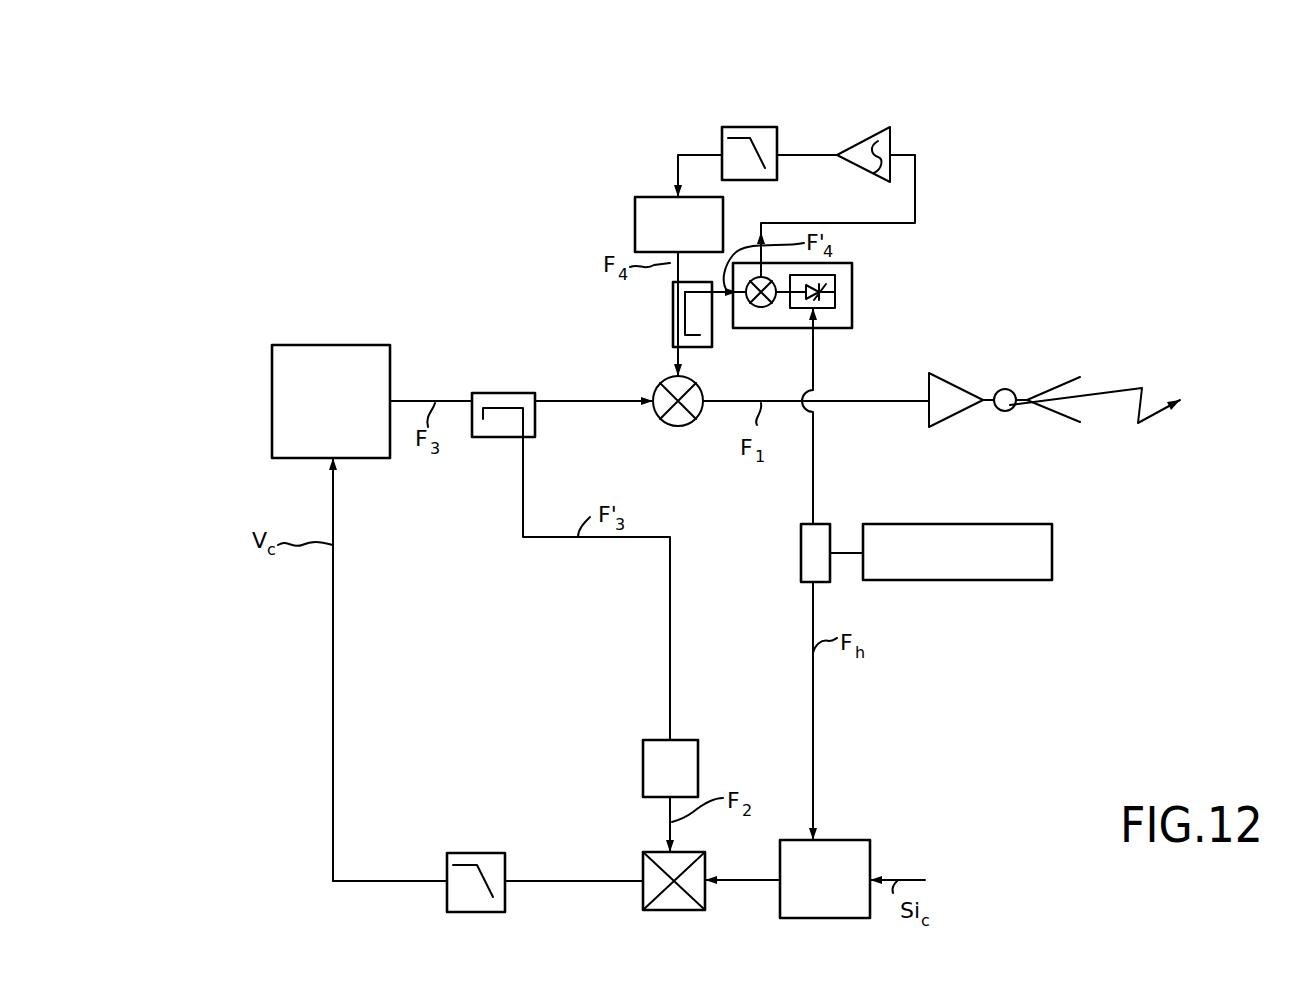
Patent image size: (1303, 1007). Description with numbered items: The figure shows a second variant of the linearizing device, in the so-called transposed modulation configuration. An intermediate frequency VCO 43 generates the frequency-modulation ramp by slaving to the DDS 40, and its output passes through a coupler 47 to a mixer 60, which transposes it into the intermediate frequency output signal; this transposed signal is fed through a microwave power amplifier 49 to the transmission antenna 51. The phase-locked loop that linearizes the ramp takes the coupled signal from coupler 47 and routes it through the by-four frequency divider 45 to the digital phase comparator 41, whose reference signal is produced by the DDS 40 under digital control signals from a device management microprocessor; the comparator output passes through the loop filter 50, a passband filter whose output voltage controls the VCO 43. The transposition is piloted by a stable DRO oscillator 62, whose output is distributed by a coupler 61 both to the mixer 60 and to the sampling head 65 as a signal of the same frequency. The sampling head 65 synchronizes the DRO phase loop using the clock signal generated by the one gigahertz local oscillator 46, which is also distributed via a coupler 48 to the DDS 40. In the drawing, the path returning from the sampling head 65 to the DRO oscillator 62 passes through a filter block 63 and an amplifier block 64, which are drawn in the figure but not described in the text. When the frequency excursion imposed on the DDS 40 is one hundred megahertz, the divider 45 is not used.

The DDS 40 is at (826, 920).
The digital phase comparator 41 is at (643, 893).
The VCO 43 is at (272, 431).
The by-four frequency divider 45 is at (692, 738).
The local oscillator 46 is at (940, 580).
The coupler 47 is at (472, 438).
The coupler 48 is at (827, 523).
The microwave power amplifier 49 is at (955, 414).
The loop filter 50 is at (483, 915).
The transmission antenna 51 is at (1010, 409).
The mixer 60 is at (660, 384).
The coupler 61 is at (673, 292).
The DRO oscillator 62 is at (635, 218).
The low-pass filter 63 is at (722, 130).
The amplifier 64 is at (892, 128).
The sampling head 65 is at (776, 328).